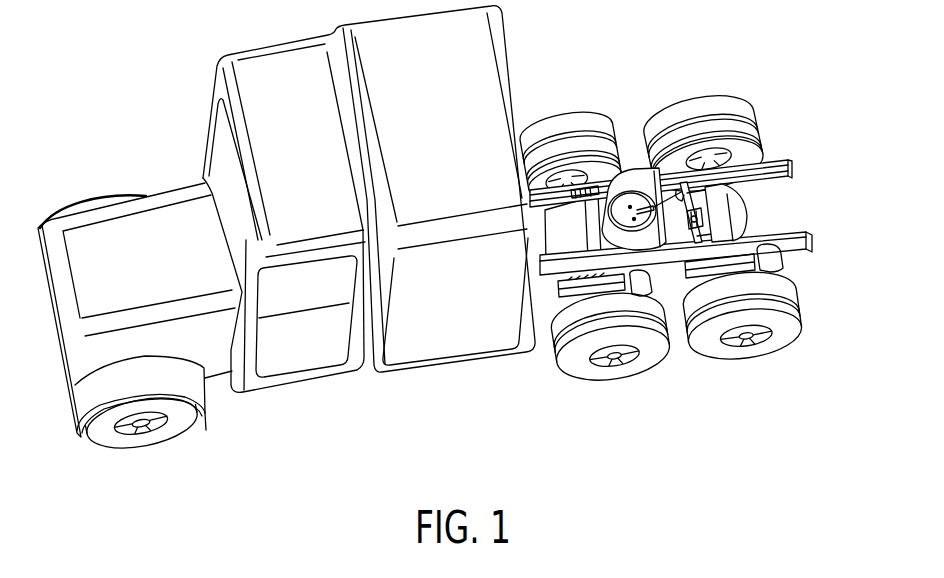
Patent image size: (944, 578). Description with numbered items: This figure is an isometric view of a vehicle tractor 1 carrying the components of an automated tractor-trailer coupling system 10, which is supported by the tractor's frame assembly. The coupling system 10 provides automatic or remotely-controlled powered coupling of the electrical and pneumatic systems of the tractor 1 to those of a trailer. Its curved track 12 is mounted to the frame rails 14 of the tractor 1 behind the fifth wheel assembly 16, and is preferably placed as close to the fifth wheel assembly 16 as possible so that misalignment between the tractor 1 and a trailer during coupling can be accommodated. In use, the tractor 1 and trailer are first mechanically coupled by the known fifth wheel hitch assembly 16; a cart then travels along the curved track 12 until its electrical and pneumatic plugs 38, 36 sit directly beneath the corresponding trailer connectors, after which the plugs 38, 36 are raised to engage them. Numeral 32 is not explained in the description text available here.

The tractor 1 is at (466, 370).
The tractor-trailer coupling system 10 is at (712, 211).
The curved track 12 is at (716, 224).
The frame rails 14 is at (784, 158).
The fifth wheel assembly 16 is at (634, 169).
The mounting plate 32 is at (702, 213).
The pneumatic plug 36 is at (680, 196).
The electrical plug 38 is at (694, 219).